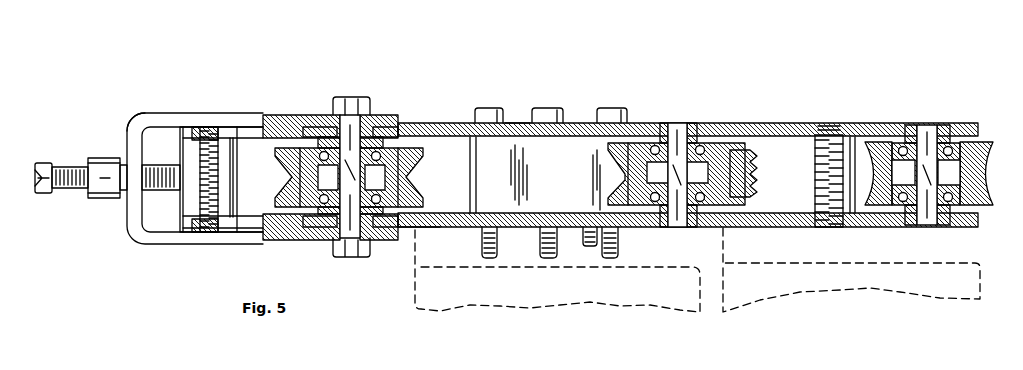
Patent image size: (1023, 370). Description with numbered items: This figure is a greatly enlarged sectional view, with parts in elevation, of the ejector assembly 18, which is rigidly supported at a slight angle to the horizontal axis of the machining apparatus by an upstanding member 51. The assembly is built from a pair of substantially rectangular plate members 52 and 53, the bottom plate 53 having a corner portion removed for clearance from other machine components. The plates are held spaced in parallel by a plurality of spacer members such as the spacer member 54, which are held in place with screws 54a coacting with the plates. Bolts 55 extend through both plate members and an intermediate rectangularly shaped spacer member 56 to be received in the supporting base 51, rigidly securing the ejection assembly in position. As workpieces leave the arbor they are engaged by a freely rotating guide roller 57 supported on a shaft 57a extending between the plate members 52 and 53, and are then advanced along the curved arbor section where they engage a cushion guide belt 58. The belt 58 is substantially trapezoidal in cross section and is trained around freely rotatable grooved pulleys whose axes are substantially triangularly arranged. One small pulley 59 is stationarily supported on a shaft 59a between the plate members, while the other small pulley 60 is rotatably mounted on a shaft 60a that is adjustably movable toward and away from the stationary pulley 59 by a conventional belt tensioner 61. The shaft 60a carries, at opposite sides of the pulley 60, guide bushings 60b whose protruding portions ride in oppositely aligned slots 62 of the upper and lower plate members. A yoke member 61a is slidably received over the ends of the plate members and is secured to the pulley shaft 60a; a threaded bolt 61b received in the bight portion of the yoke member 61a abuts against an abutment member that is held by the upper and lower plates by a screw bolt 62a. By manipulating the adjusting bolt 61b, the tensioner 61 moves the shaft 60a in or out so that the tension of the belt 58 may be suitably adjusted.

The ejector assembly 18 is at (517, 120).
The upstanding member 51 is at (443, 300).
The plate member 52 is at (443, 123).
The bottom plate 53 is at (413, 233).
The spacer member 54 is at (818, 190).
The screws 54a is at (818, 125).
The bolts 55 is at (610, 107).
The intermediate rectangularly shaped spacer member 56 is at (490, 158).
The guide roller 57 is at (983, 176).
The shaft 57a is at (930, 158).
The cushion guide belt 58 is at (755, 172).
The pulley 59 is at (612, 164).
The shaft 59a is at (697, 138).
The pulley 60 is at (293, 140).
The shaft 60a is at (350, 160).
The guide bushings 60b is at (373, 113).
The belt tensioner 61 is at (250, 236).
The yoke member 61a is at (165, 242).
The threaded bolt 61b is at (50, 196).
The slots 62 is at (178, 203).
The screw bolt 62a is at (197, 210).